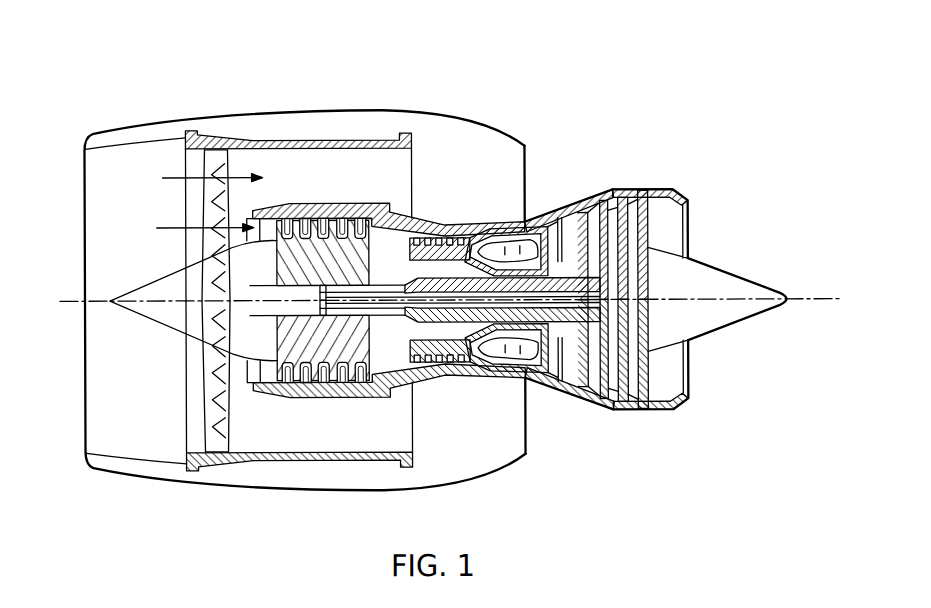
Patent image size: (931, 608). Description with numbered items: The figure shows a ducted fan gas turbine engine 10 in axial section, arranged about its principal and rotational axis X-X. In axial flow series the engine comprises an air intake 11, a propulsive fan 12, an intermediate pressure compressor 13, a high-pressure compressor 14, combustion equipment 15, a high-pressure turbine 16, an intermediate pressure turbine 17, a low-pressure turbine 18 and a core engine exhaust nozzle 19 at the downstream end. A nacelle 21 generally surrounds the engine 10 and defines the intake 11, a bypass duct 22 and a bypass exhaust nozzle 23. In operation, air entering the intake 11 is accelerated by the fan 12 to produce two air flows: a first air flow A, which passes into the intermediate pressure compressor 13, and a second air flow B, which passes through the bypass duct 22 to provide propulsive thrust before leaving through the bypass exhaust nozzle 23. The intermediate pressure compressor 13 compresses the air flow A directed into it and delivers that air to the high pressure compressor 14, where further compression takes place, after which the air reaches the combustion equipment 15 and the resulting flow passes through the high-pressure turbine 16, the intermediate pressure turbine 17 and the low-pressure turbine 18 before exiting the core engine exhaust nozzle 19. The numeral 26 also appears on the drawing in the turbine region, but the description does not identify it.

The ducted fan gas turbine engine 10 is at (126, 84).
The air intake 11 is at (130, 143).
The propulsive fan 12 is at (205, 418).
The intermediate pressure compressor 13 is at (337, 372).
The high-pressure compressor 14 is at (445, 236).
The combustion equipment 15 is at (505, 372).
The high-pressure turbine 16 is at (532, 381).
The intermediate pressure turbine 17 is at (587, 225).
The low-pressure turbine 18 is at (592, 395).
The core engine exhaust nozzle 19 is at (678, 190).
The nacelle 21 is at (340, 120).
The bypass duct 22 is at (483, 175).
The bypass exhaust nozzle 23 is at (527, 140).
The turbine rotor 26 is at (604, 213).